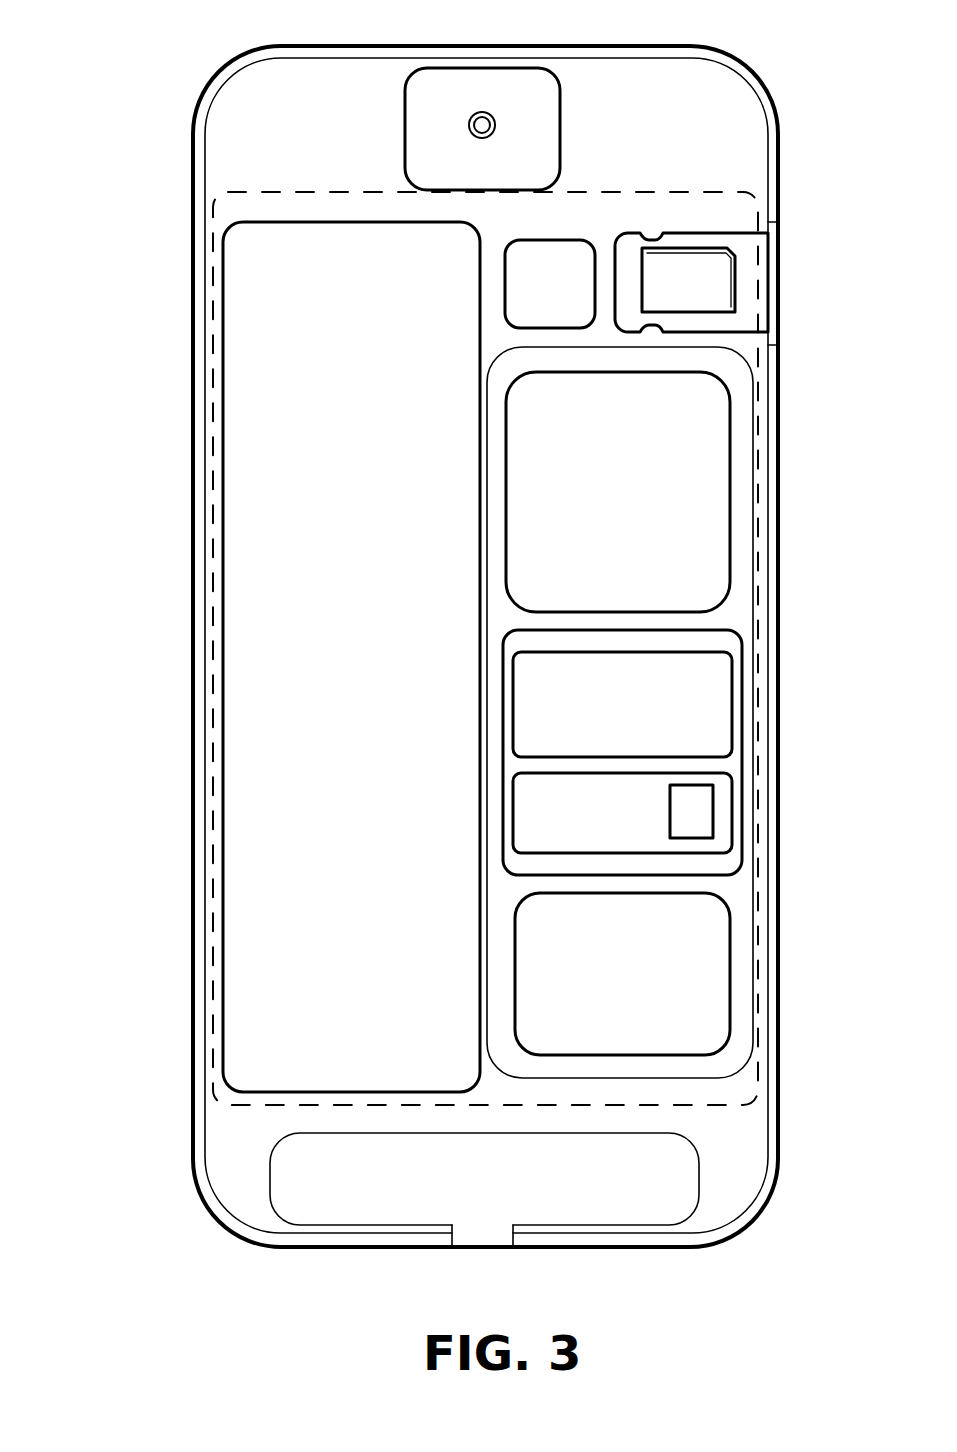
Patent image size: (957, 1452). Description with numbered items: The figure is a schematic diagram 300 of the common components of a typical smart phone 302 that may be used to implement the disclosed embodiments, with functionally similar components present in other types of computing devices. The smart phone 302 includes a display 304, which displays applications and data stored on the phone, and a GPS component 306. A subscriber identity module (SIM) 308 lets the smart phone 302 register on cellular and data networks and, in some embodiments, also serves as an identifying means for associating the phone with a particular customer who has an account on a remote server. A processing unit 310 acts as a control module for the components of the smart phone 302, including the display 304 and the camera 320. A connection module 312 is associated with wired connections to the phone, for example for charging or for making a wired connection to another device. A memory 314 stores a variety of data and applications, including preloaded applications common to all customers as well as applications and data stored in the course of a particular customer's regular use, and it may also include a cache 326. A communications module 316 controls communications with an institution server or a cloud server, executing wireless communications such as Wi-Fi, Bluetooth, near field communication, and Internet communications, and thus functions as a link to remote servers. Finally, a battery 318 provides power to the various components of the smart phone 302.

The schematic diagram 300 is at (126, 60).
The smart phone 302 is at (193, 258).
The display 304 is at (213, 375).
The GPS component 306 is at (577, 240).
The subscriber identity module (SIM) 308 is at (672, 233).
The processing unit 310 is at (643, 508).
The connection module 312 is at (643, 717).
The memory 314 is at (643, 826).
The communications module 316 is at (643, 989).
The battery 318 is at (374, 672).
The camera 320 is at (405, 110).
The cache 326 is at (713, 808).